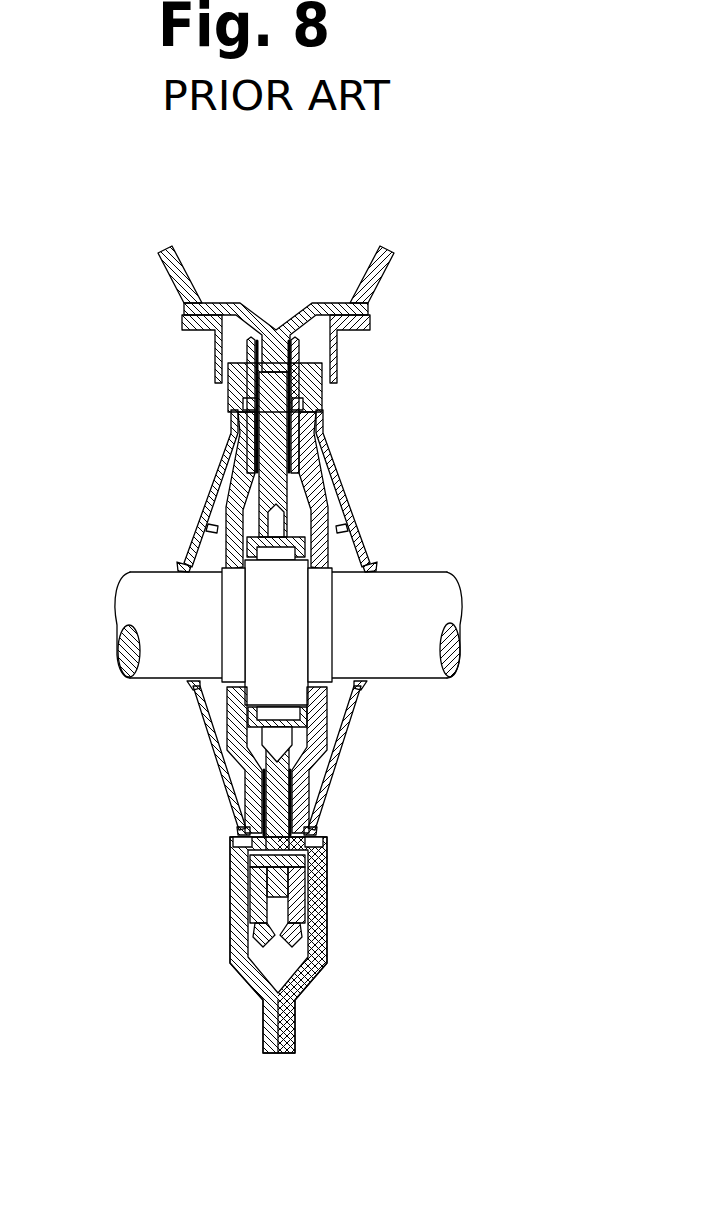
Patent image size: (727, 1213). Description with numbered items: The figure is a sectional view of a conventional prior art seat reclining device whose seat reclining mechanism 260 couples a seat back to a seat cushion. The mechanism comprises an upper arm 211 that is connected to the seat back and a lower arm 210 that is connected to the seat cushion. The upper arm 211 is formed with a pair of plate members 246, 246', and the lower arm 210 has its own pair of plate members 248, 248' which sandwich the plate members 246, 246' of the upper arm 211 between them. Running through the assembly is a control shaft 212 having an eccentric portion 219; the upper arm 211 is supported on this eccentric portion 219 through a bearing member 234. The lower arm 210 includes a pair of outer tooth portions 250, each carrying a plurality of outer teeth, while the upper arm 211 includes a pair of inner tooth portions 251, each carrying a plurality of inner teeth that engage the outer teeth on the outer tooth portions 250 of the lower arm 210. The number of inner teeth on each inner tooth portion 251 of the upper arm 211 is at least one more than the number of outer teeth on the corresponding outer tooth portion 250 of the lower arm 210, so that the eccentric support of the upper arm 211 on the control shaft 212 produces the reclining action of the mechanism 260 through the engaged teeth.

The lower arm 210 is at (330, 994).
The upper arm 211 is at (243, 294).
The control shaft 212 is at (467, 597).
The eccentric portion 219 is at (302, 626).
The bearing member 234 is at (284, 552).
The plate member 246 is at (166, 453).
The plate member 246' is at (383, 453).
The plate member 248 is at (150, 491).
The plate member 248' is at (413, 491).
The outer tooth portion 250 is at (232, 403).
The inner tooth portion 251 is at (335, 372).
The seat reclining mechanism 260 is at (460, 709).